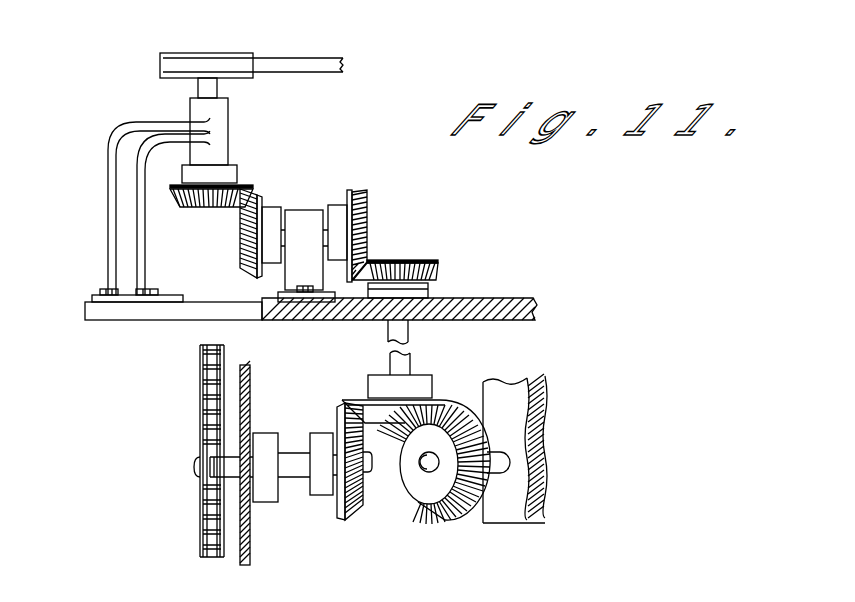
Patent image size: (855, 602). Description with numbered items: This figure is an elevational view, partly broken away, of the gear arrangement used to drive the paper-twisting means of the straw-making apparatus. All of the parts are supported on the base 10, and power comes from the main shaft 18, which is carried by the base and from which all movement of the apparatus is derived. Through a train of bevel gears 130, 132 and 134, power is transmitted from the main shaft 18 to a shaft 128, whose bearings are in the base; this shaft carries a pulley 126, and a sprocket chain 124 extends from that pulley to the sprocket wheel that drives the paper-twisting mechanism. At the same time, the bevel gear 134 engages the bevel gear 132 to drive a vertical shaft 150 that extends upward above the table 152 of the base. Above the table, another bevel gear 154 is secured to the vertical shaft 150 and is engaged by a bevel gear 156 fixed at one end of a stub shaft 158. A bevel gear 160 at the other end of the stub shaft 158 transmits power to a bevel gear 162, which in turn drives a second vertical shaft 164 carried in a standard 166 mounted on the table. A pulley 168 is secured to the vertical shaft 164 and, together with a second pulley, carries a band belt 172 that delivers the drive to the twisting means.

The base 10 is at (195, 332).
The shaft 18 is at (495, 450).
The sprocket chain 124 is at (196, 364).
The pulley 126 is at (200, 416).
The shaft 128 is at (295, 478).
The bevel gear 130 is at (350, 520).
The bevel gear 132 is at (435, 400).
The bevel gear 134 is at (460, 520).
The vertical shaft 150 is at (409, 332).
The table 152 is at (485, 297).
The bevel gear 154 is at (400, 260).
The bevel gear 156 is at (367, 218).
The stub shaft 158 is at (287, 232).
The bevel gear 160 is at (247, 240).
The bevel gear 162 is at (183, 207).
The vertical shaft 164 is at (208, 90).
The standard 166 is at (104, 155).
The pulley 168 is at (223, 53).
The band belt 172 is at (312, 73).